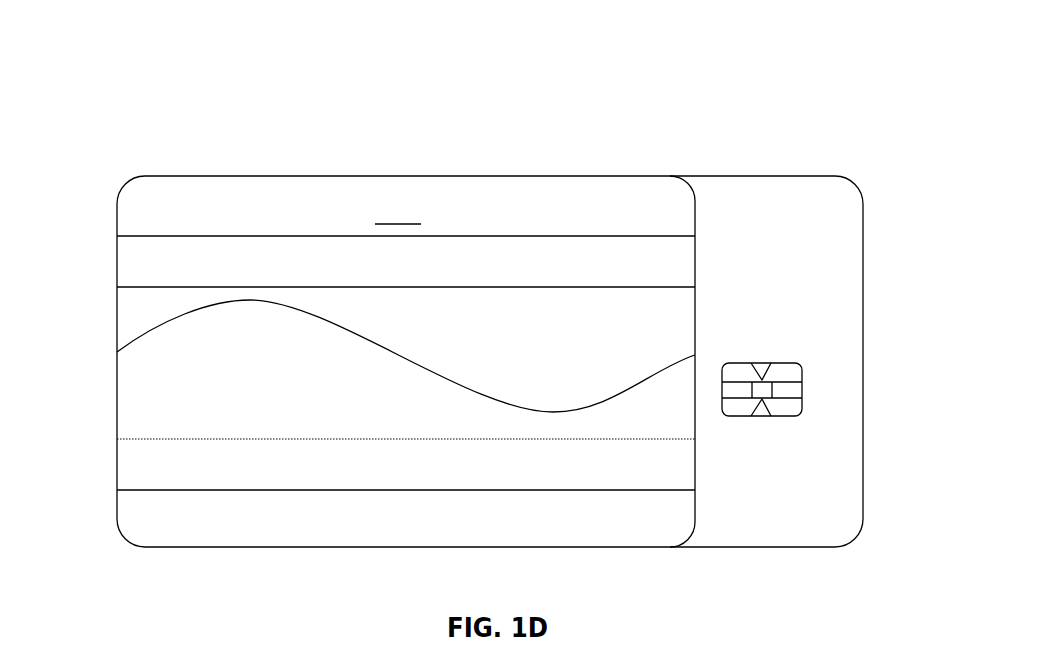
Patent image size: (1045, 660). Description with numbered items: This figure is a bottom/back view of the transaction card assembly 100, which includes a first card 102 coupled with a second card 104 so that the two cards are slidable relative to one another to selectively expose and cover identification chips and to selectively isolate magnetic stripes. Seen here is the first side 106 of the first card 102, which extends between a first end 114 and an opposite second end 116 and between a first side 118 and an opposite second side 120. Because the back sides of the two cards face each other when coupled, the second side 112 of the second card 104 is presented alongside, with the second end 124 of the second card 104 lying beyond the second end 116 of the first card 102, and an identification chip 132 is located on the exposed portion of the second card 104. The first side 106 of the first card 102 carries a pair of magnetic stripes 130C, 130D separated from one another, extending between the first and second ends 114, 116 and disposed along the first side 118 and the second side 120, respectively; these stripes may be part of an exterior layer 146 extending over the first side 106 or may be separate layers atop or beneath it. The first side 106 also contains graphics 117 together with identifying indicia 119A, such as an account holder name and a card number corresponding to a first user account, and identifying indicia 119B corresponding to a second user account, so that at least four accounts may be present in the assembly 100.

The assembly 100 is at (496, 337).
The first card 102 is at (289, 201).
The second card 104 is at (778, 207).
The first side 106 is at (191, 196).
The second side 112 is at (820, 532).
The first end 114 is at (117, 281).
The second end 116 is at (697, 503).
The graphics 117 is at (316, 307).
The first side 118 is at (425, 175).
The identifying indicia 119A is at (156, 418).
The identifying indicia 119B is at (552, 304).
The second side 120 is at (375, 549).
The second end 124 is at (865, 305).
The magnetic stripe 130C is at (452, 265).
The magnetic stripe 130D is at (230, 478).
The identification chip 132 is at (802, 390).
The exterior layer 146 is at (398, 212).